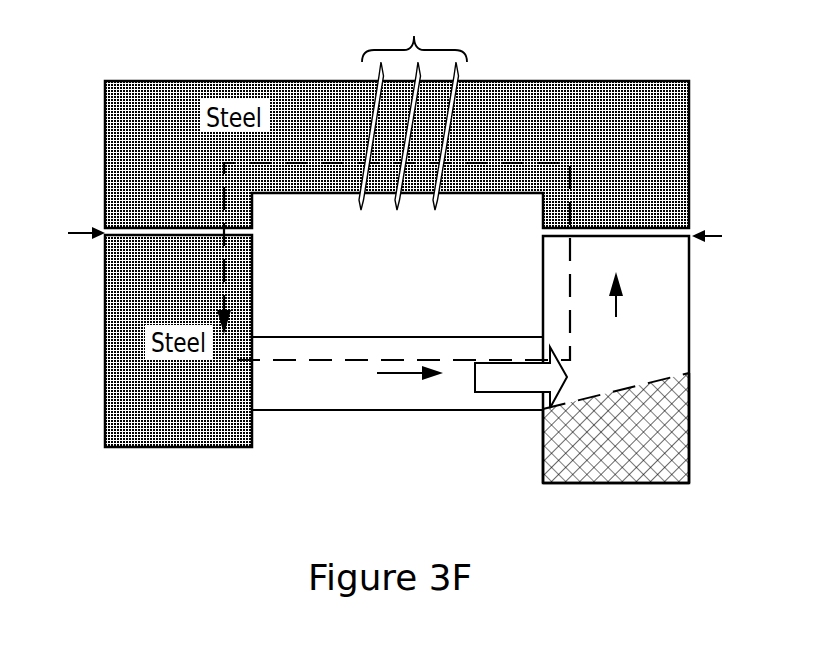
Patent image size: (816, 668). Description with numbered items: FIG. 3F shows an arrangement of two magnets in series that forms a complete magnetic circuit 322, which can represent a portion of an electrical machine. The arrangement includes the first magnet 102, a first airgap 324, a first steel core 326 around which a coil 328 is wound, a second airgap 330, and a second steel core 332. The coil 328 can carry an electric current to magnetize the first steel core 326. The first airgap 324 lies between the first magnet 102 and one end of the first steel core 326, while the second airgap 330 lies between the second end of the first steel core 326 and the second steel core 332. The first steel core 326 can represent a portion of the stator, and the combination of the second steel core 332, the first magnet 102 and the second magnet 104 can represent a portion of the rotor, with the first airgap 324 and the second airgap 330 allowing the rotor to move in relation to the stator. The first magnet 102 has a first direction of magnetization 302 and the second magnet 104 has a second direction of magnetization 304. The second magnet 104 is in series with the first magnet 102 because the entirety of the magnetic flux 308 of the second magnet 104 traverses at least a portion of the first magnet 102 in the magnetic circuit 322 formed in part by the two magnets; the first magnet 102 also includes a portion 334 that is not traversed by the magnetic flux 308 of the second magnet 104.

The first magnet 102 is at (690, 363).
The second magnet 104 is at (310, 410).
The first direction of magnetization 302 is at (616, 305).
The second direction of magnetization 304 is at (402, 375).
The magnetic flux 308 is at (487, 393).
The magnetic circuit 322 is at (573, 187).
The first airgap 324 is at (733, 238).
The first steel core 326 is at (605, 81).
The coil 328 is at (413, 109).
The second airgap 330 is at (65, 236).
The second steel core 332 is at (115, 283).
The portion 334 is at (677, 437).